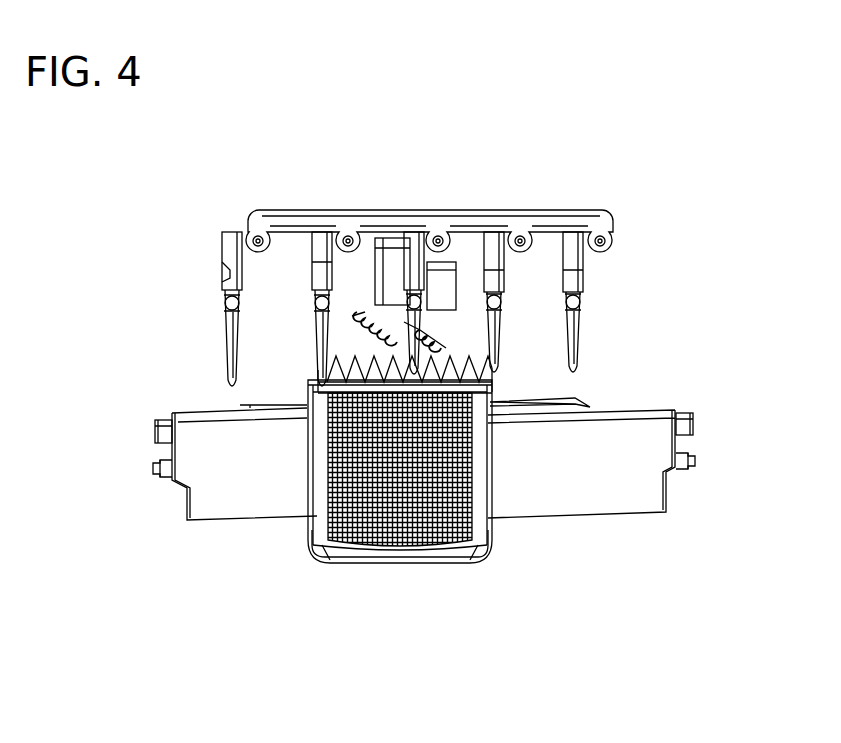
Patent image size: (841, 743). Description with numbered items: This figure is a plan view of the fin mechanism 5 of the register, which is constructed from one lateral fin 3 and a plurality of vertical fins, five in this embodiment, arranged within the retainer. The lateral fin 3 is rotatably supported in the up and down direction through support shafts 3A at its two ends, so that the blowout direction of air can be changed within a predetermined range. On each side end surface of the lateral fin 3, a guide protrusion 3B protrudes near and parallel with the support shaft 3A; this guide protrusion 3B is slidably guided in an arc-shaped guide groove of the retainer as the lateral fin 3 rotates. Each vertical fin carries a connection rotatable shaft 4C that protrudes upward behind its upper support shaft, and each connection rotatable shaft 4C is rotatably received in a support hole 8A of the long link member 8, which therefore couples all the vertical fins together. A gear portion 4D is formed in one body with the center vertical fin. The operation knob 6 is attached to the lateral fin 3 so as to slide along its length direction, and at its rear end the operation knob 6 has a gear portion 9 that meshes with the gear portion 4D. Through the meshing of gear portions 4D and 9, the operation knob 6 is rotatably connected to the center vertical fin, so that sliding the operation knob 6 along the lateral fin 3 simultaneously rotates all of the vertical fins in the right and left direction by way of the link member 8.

The lateral fin 3 is at (640, 486).
The support shaft 3A is at (155, 468).
The guide protrusion 3B is at (157, 432).
The connection rotatable shaft 4C is at (259, 234).
The gear portion 4D is at (358, 308).
The fin mechanism 5 is at (630, 364).
The operation knob 6 is at (400, 554).
The link member 8 is at (394, 224).
The support hole 8A is at (349, 234).
The gear portion 9 is at (323, 393).